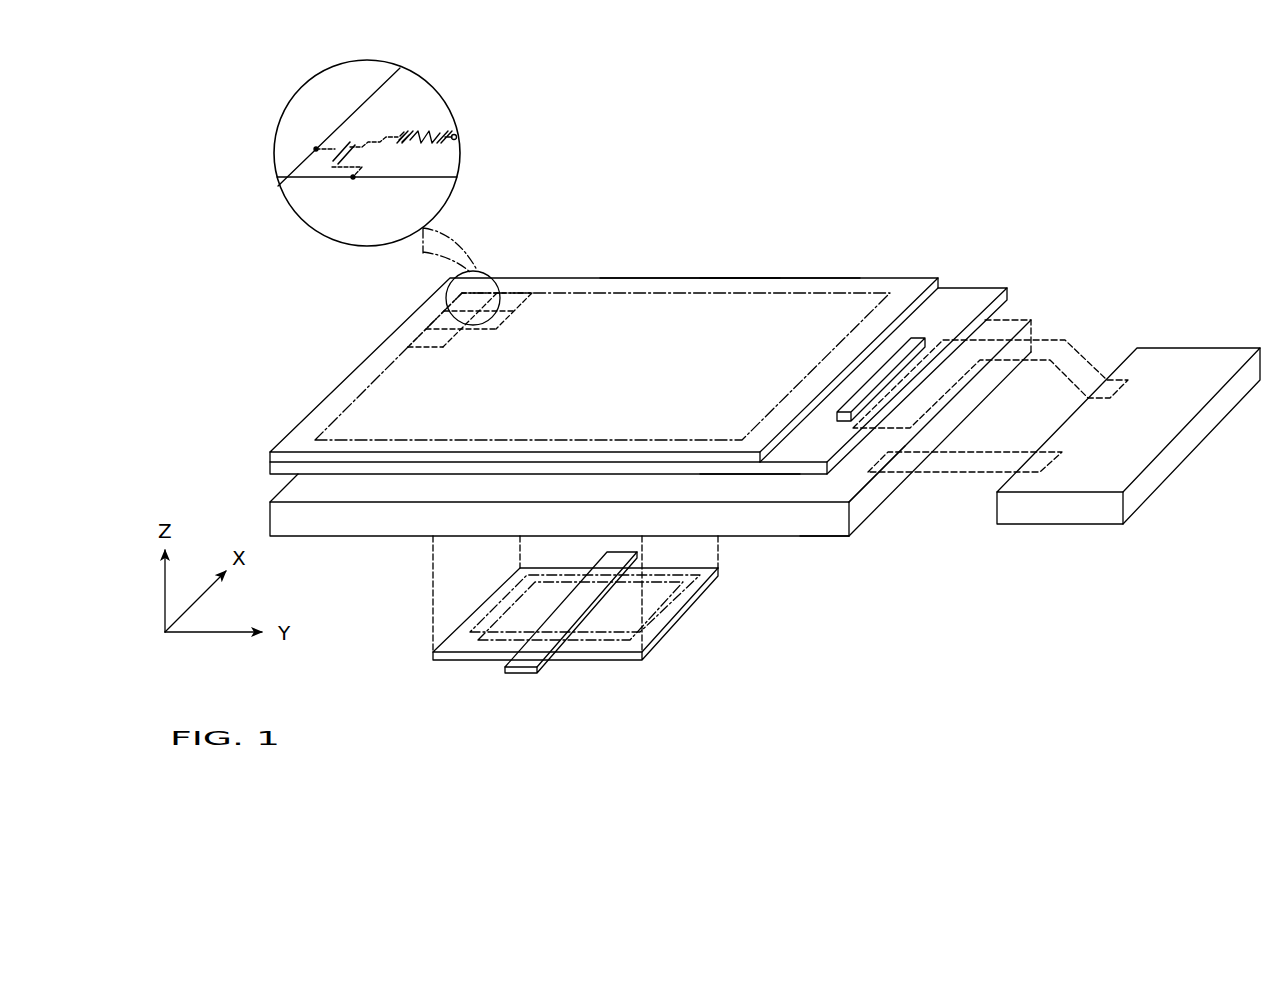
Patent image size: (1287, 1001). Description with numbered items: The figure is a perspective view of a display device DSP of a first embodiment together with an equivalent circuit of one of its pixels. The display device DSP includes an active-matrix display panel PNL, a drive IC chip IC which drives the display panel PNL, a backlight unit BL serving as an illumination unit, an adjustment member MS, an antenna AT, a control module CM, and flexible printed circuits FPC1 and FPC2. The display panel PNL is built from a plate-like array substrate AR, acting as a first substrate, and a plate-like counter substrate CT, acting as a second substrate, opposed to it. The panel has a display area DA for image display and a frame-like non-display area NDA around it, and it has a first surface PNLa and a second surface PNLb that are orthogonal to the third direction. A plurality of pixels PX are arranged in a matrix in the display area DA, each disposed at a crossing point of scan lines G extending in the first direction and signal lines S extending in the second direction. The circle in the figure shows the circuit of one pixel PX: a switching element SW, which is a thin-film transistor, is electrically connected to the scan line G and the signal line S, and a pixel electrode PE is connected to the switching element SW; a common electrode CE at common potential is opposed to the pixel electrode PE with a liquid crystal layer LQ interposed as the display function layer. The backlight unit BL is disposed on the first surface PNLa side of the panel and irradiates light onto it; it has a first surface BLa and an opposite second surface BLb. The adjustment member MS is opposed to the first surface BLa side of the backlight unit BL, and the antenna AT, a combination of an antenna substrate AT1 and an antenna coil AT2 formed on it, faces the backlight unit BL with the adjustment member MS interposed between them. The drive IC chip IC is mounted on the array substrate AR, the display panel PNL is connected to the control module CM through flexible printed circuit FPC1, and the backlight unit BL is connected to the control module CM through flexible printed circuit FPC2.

The display device DSP is at (1098, 214).
The display panel PNL is at (266, 460).
The counter substrate CT is at (903, 278).
The array substrate AR is at (1005, 290).
The first surface PNLa is at (782, 486).
The second surface PNLb is at (788, 278).
The display area DA is at (572, 297).
The non-display area NDA is at (690, 283).
The pixel PX is at (478, 303).
The drive IC chip IC is at (926, 337).
The flexible printed circuit FPC1 is at (1075, 363).
The flexible printed circuit FPC2 is at (957, 463).
The control module CM is at (1062, 513).
The backlight unit BL is at (757, 522).
The first surface BLa is at (858, 541).
The second surface BLb is at (858, 488).
The antenna AT is at (688, 619).
The antenna substrate AT1 is at (660, 642).
The antenna coil AT2 is at (605, 660).
The adjustment member MS is at (545, 668).
The scan line G is at (357, 109).
The signal line S is at (458, 177).
The switching element SW is at (329, 187).
The pixel electrode PE is at (401, 132).
The common electrode CE is at (456, 136).
The liquid crystal layer LQ is at (425, 130).